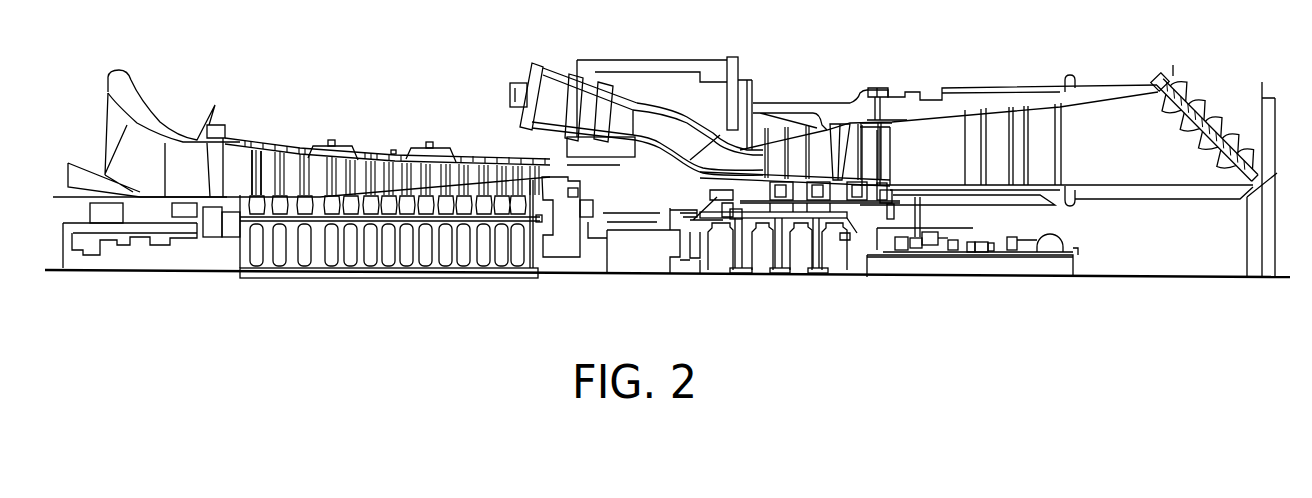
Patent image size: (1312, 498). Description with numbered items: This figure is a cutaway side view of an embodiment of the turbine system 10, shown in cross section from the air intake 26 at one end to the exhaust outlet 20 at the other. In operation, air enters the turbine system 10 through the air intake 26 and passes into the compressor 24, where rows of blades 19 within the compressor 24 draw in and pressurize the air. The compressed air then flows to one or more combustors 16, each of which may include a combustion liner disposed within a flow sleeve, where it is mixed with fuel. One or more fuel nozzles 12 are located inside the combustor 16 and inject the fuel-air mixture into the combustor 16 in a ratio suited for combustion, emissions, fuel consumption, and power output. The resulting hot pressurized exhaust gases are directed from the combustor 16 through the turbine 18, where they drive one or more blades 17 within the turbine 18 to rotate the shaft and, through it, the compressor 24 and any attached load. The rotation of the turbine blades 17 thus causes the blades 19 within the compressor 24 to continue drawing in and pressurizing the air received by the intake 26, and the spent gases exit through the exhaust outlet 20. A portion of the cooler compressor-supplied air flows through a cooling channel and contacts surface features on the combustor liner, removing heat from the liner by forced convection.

The turbine system 10 is at (672, 291).
The fuel nozzle 12 is at (528, 80).
The combustor 16 is at (703, 75).
The turbine blade 17 is at (820, 137).
The turbine 18 is at (768, 50).
The compressor blade 19 is at (268, 163).
The exhaust outlet 20 is at (1188, 85).
The compressor 24 is at (485, 135).
The air intake 26 is at (137, 168).